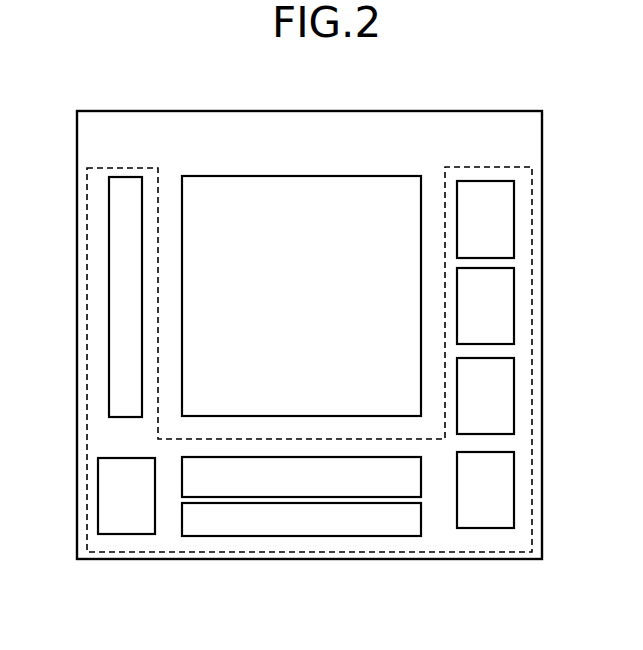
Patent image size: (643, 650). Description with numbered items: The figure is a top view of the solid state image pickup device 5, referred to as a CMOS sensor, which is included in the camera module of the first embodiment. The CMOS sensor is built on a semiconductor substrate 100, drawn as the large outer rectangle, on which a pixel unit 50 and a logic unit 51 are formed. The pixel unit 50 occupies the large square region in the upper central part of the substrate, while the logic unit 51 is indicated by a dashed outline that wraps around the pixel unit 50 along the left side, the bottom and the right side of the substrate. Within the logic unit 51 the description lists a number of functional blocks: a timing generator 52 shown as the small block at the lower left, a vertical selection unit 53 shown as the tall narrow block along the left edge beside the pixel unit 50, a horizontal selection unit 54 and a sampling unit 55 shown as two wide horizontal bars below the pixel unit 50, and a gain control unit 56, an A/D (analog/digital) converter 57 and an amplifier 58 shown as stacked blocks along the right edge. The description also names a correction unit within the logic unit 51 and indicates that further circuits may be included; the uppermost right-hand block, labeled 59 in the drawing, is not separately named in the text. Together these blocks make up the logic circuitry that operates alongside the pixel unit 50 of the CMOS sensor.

The solid state image pickup device 5 is at (461, 97).
The semiconductor substrate 100 is at (542, 134).
The logic unit 51 is at (533, 243).
The pixel unit 50 is at (383, 160).
The vertical selection unit 53 is at (125, 273).
The timing generator 52 is at (108, 487).
The horizontal selection unit 54 is at (380, 487).
The sampling unit 55 is at (257, 528).
The gain control unit 56 is at (508, 489).
The A/D converter 57 is at (507, 399).
The amplifier 58 is at (507, 310).
The key 59 is at (507, 210).